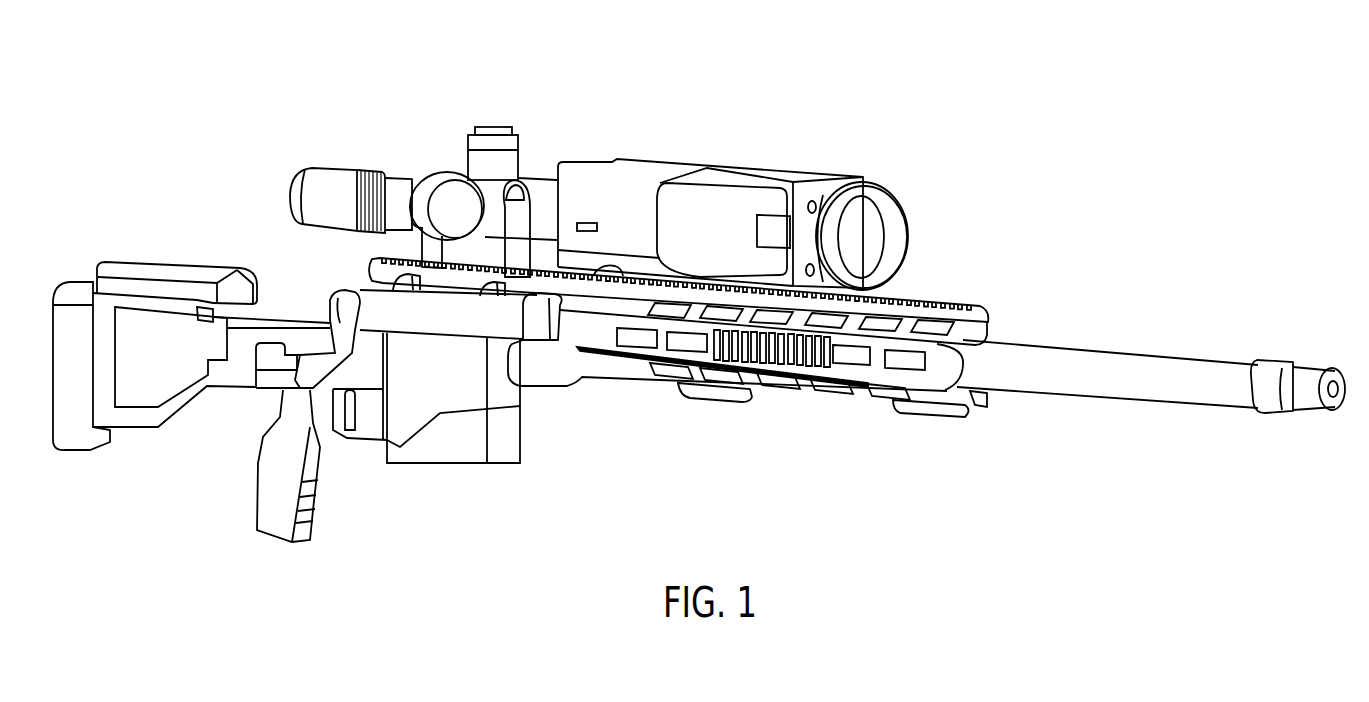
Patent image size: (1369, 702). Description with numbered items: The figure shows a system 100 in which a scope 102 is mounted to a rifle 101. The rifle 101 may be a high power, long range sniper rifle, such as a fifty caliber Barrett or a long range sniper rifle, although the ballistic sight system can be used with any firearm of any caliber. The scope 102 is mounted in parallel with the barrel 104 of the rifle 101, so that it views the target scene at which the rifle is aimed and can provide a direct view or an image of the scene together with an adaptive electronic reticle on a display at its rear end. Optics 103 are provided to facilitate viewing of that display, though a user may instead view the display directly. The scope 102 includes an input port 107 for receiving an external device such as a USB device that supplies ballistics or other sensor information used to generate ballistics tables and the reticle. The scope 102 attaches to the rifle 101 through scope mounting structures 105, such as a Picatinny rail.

The system 100 is at (1025, 103).
The rifle 101 is at (637, 380).
The scope 102 is at (582, 168).
The optics 103 is at (437, 147).
The barrel 104 is at (1085, 360).
The scope mounting structures 105 is at (585, 276).
The input port 107 is at (593, 220).